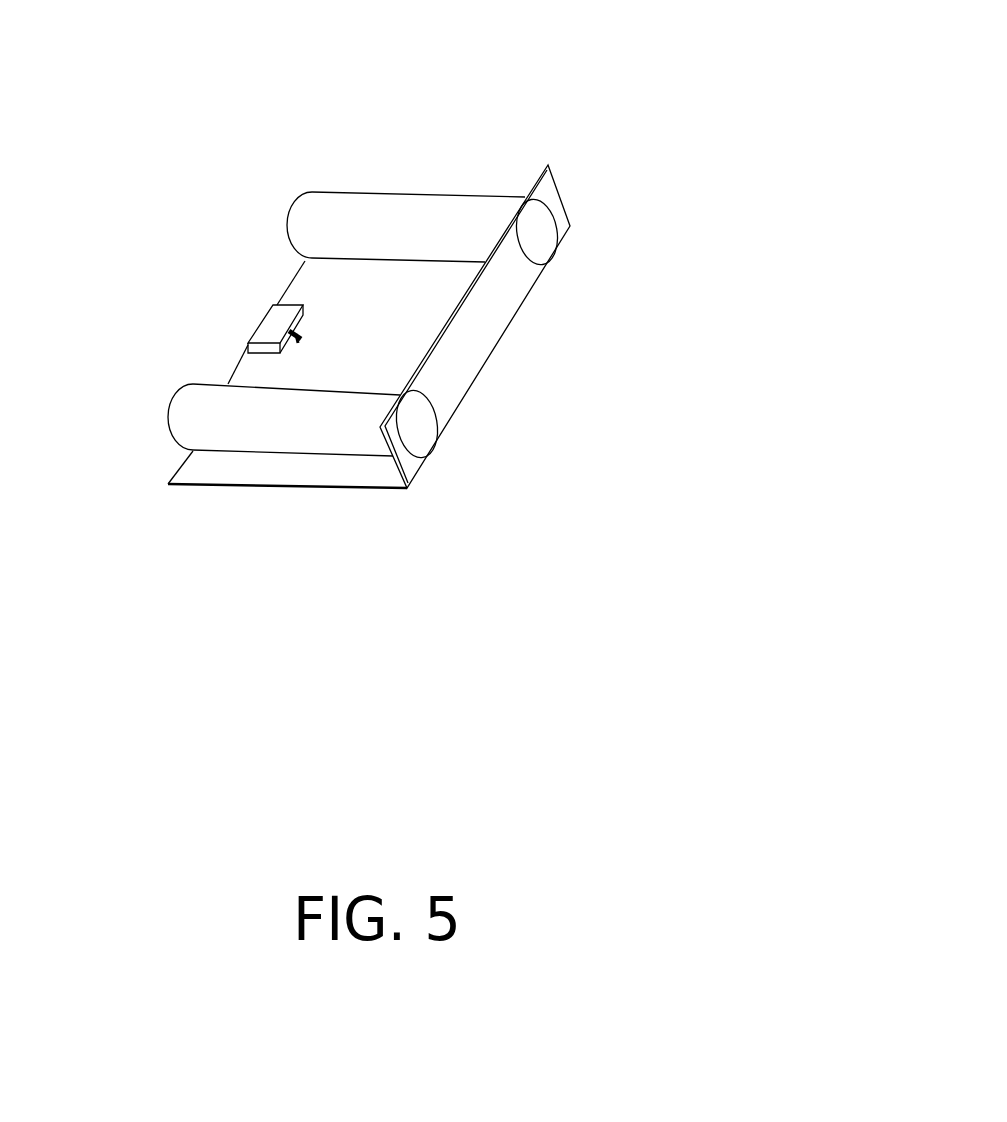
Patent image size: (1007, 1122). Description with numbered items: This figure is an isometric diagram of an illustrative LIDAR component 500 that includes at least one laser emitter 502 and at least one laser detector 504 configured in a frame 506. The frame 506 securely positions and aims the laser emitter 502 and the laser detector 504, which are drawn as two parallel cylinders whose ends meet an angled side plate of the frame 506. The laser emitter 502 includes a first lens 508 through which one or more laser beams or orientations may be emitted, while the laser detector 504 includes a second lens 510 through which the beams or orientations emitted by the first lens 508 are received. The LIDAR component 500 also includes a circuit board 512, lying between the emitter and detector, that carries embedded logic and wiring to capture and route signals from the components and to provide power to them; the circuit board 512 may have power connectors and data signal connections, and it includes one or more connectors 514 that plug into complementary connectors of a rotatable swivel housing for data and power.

The LIDAR component 500 is at (566, 66).
The laser emitter 502 is at (345, 192).
The laser detector 504 is at (210, 395).
The frame 506 is at (485, 327).
The first lens 508 is at (567, 225).
The second lens 510 is at (437, 402).
The circuit board 512 is at (318, 297).
The connectors 514 is at (260, 322).